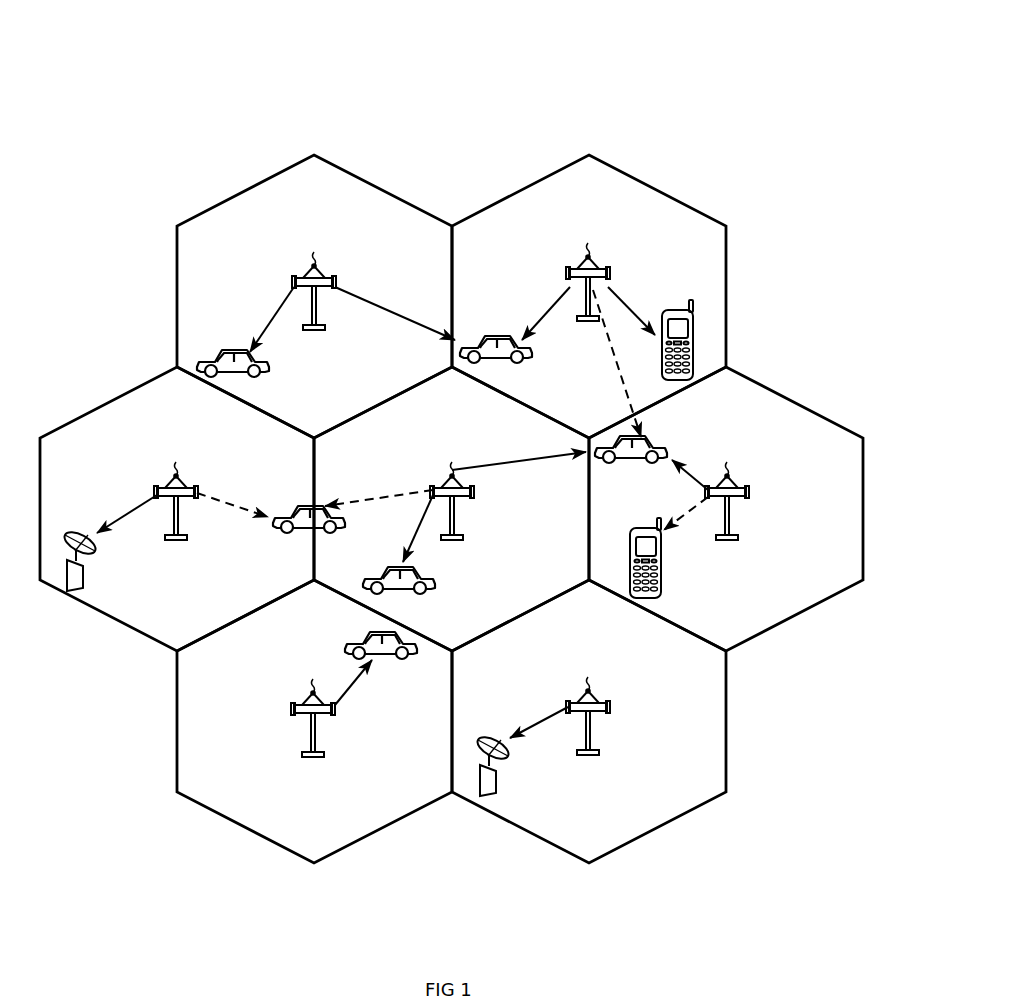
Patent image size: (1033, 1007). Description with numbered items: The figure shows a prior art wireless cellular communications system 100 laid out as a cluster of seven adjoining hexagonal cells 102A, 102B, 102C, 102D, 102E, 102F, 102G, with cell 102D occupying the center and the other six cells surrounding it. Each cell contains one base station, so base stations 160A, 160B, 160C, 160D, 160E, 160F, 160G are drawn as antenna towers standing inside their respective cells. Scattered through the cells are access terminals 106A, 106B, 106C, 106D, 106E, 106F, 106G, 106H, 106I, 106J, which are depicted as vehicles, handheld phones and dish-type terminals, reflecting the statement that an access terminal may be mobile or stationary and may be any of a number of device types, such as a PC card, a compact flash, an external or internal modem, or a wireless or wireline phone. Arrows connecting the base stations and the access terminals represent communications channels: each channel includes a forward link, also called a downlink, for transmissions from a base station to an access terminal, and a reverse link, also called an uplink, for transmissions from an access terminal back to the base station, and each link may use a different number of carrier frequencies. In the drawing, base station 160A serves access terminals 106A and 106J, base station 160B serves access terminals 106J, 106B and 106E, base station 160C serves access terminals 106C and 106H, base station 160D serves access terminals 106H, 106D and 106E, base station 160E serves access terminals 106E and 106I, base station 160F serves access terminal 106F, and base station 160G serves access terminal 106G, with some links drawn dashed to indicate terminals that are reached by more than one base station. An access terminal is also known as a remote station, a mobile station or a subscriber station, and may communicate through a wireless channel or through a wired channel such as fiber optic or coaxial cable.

The wireless cellular communications system 100 is at (727, 83).
The cell 102A is at (228, 199).
The cell 102B is at (678, 200).
The cell 102C is at (108, 403).
The cell 102D is at (473, 416).
The cell 102E is at (798, 404).
The cell 102F is at (208, 808).
The cell 102G is at (694, 809).
The base station 160A is at (314, 259).
The base station 160B is at (588, 256).
The base station 160C is at (176, 467).
The base station 160D is at (437, 488).
The base station 160E is at (727, 466).
The base station 160F is at (313, 684).
The base station 160G is at (588, 682).
The access terminal 106A is at (267, 368).
The access terminal 106B is at (676, 305).
The access terminal 106C is at (83, 578).
The access terminal 106D is at (436, 582).
The access terminal 106E is at (629, 459).
The access terminal 106F is at (414, 652).
The access terminal 106G is at (497, 785).
The access terminal 106H is at (277, 528).
The access terminal 106I is at (660, 577).
The access terminal 106J is at (496, 339).